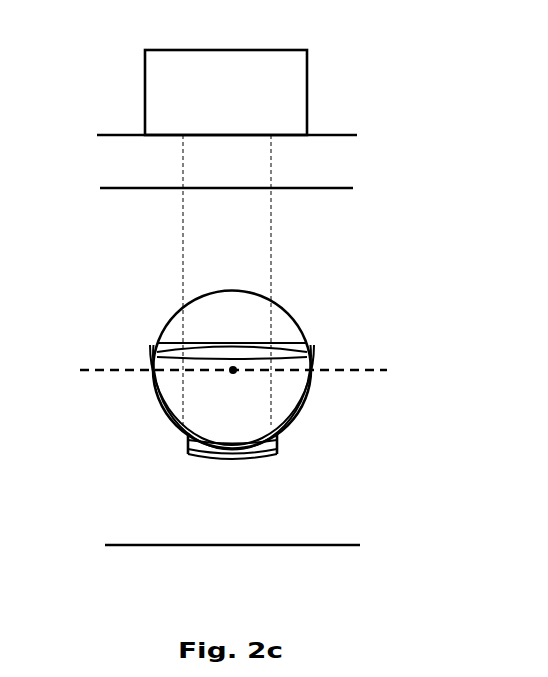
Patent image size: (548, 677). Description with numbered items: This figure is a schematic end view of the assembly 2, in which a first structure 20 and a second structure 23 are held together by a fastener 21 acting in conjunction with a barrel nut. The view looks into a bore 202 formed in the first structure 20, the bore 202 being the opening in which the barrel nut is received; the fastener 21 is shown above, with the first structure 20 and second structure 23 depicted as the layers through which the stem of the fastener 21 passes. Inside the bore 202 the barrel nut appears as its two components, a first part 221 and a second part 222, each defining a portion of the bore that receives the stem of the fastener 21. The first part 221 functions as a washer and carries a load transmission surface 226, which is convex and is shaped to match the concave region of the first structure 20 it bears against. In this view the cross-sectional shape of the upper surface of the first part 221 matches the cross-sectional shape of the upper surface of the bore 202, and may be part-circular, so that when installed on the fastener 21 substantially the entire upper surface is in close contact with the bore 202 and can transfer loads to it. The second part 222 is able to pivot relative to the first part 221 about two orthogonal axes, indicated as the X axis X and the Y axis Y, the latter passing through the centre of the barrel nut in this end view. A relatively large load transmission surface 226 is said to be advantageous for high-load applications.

The assembly 2 is at (97, 79).
The fastener 21 is at (295, 85).
The second structure 23 is at (332, 176).
The first structure 20 is at (305, 266).
The load transmission surface 226 is at (197, 296).
The first part 221 is at (258, 327).
The second part 222 is at (258, 410).
The bore 202 is at (188, 460).
The X axis X is at (108, 373).
The Y axis Y is at (236, 372).